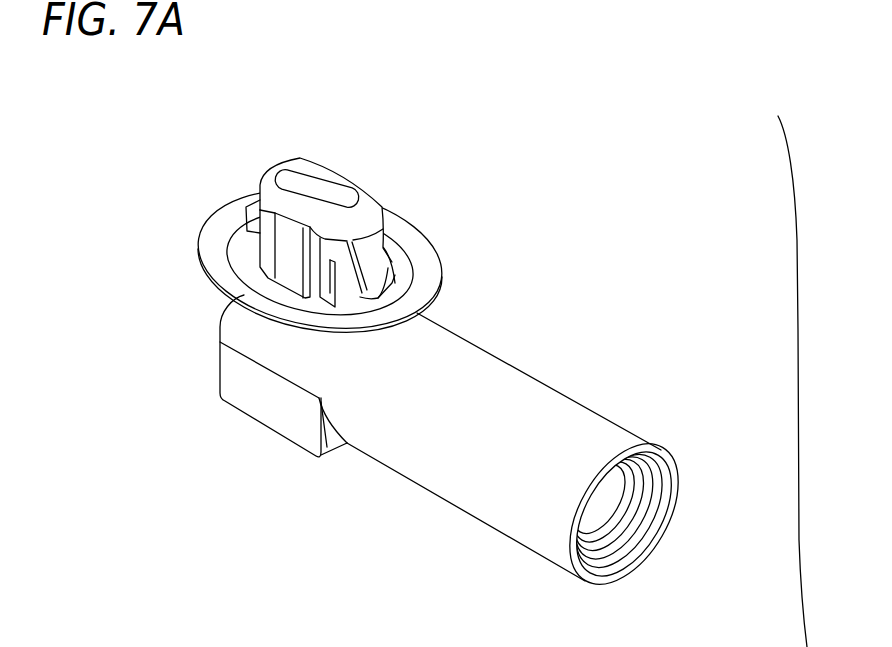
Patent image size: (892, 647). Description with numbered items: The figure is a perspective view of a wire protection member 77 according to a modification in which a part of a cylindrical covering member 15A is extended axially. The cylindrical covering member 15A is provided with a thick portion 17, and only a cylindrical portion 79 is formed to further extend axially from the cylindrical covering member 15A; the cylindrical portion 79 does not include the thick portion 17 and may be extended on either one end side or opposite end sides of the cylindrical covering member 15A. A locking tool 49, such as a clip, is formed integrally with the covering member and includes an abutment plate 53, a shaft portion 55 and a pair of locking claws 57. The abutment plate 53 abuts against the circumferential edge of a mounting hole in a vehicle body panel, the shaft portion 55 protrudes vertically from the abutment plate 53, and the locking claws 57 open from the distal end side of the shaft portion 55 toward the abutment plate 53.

The cylindrical covering member 15A is at (412, 449).
The thick portion 17 is at (340, 452).
The locking tool 49 is at (350, 205).
The abutment plate 53 is at (354, 192).
The shaft portion 55 is at (283, 212).
The locking claws 57 is at (250, 205).
The wire protection member 77 is at (612, 248).
The cylindrical portion 79 is at (607, 415).